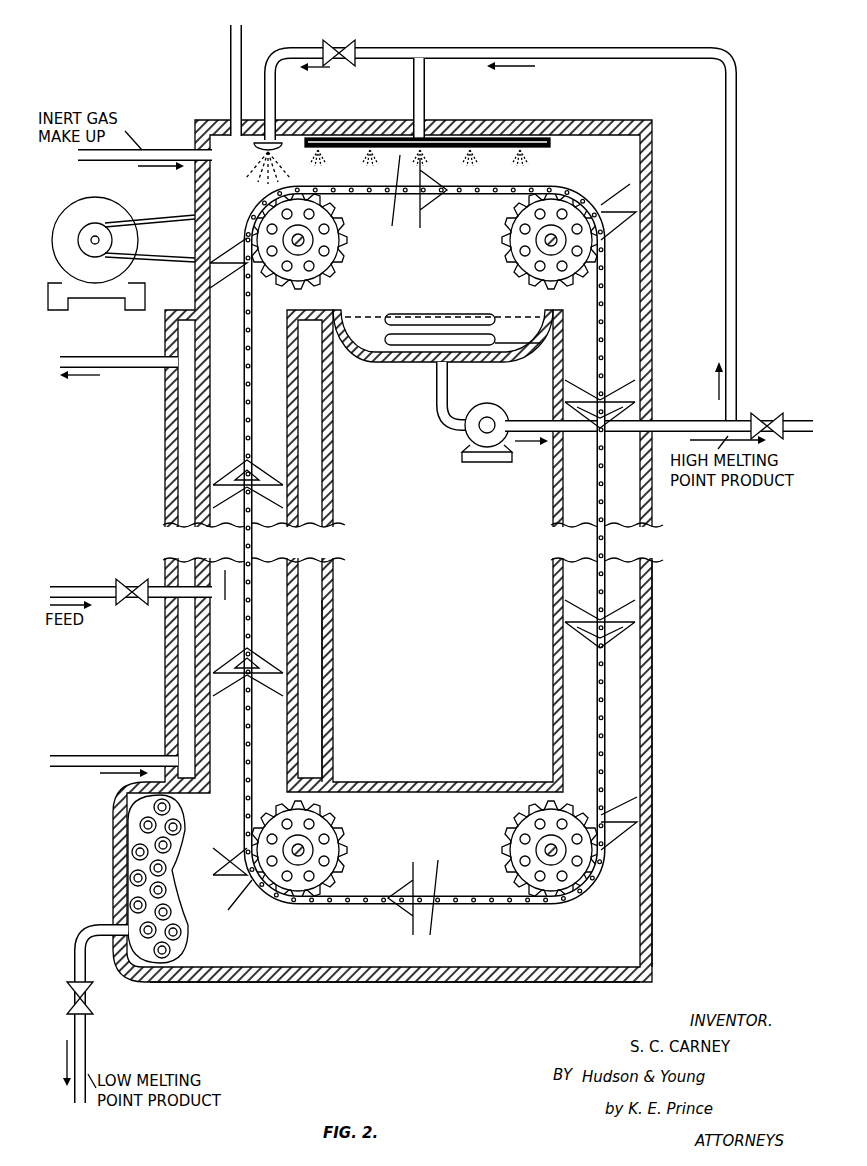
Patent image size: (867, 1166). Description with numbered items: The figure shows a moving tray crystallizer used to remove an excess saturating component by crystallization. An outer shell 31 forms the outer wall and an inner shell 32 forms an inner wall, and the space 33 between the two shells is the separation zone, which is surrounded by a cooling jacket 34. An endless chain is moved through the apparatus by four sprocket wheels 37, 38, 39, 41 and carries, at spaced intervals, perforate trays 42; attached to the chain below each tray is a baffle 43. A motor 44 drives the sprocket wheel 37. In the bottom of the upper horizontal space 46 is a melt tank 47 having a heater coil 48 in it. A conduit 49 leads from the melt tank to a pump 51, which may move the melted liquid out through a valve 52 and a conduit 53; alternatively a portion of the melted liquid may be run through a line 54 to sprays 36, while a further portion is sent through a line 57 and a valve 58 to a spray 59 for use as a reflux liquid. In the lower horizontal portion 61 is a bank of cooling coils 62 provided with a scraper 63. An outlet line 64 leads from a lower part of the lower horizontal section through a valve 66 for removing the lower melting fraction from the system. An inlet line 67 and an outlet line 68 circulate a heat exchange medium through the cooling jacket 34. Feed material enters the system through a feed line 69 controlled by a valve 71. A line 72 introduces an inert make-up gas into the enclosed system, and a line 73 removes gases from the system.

The shell 31 is at (654, 746).
The inner shell 32 is at (300, 405).
The space 33 is at (232, 576).
The jacket 34 is at (333, 720).
The sprays 36 is at (548, 146).
The sprocket wheel 37 is at (331, 256).
The sprocket wheel 38 is at (517, 256).
The sprocket wheel 39 is at (503, 848).
The sprocket wheel 41 is at (348, 850).
The perforate trays 42 is at (281, 672).
The baffle 43 is at (223, 698).
The motor 44 is at (63, 216).
The upper horizontal space 46 is at (632, 160).
The melt tank 47 is at (406, 360).
The heater coil 48 is at (430, 318).
The conduit 49 is at (449, 395).
The pump 51 is at (471, 462).
The valve 52 is at (770, 418).
The conduit 53 is at (798, 418).
The line 54 is at (737, 190).
The line 57 is at (386, 48).
The valve 58 is at (333, 48).
The spray 59 is at (258, 146).
The lower horizontal portion 61 is at (375, 960).
The cooling coils 62 is at (178, 846).
The scraper 63 is at (186, 918).
The outlet line 64 is at (88, 1032).
The valve 66 is at (89, 998).
The inlet line 67 is at (100, 757).
The outlet line 68 is at (150, 369).
The feed line 69 is at (135, 585).
The valve 71 is at (113, 585).
The line 72 is at (106, 160).
The line 73 is at (230, 36).